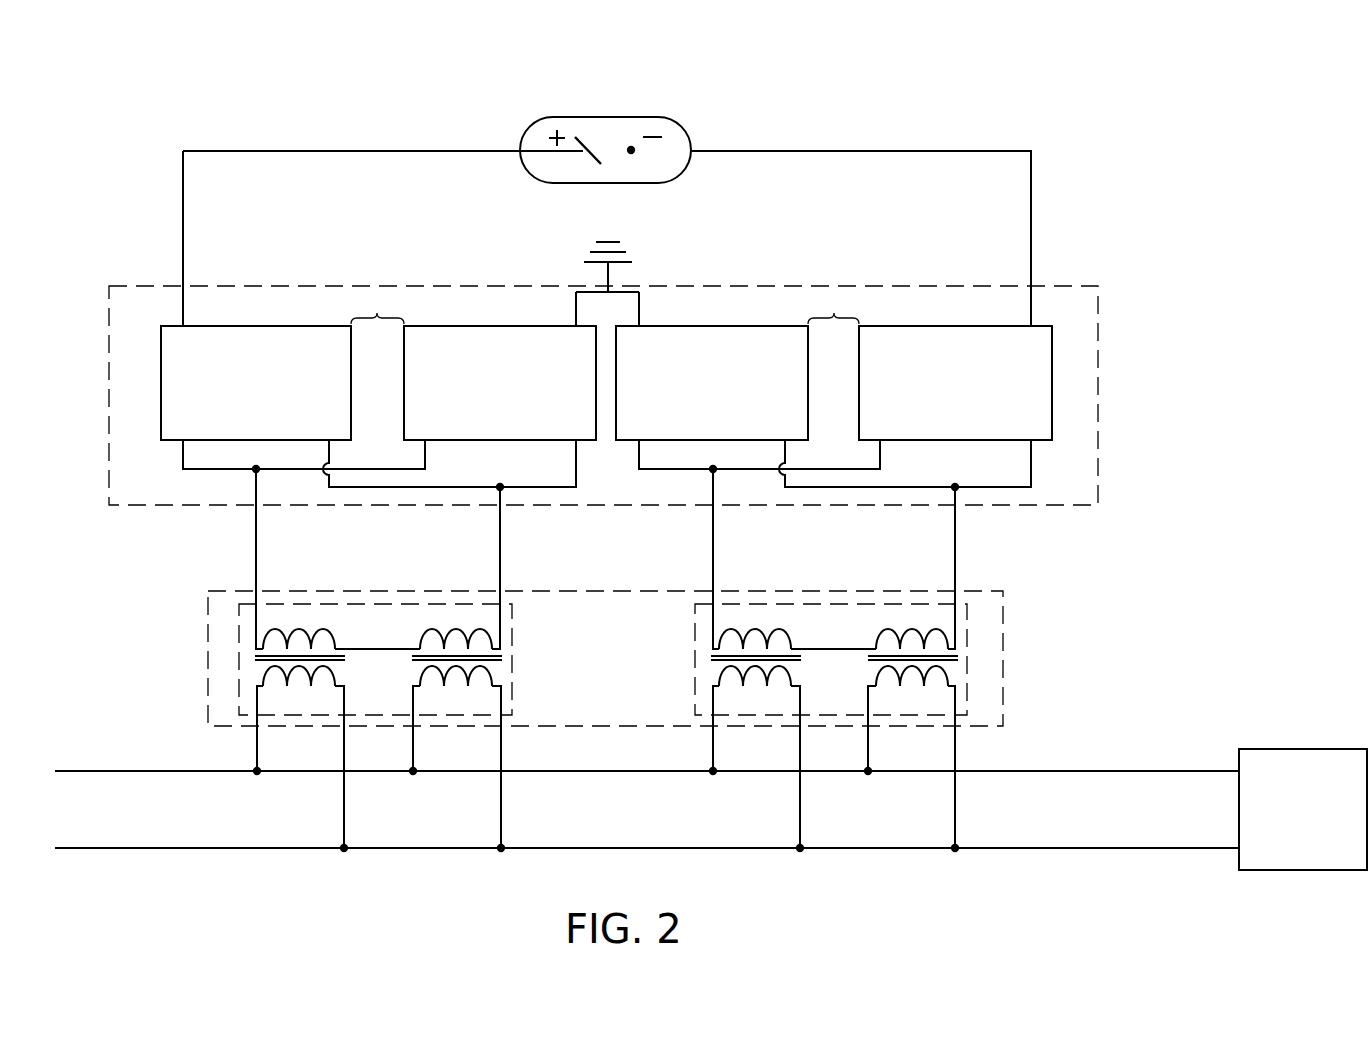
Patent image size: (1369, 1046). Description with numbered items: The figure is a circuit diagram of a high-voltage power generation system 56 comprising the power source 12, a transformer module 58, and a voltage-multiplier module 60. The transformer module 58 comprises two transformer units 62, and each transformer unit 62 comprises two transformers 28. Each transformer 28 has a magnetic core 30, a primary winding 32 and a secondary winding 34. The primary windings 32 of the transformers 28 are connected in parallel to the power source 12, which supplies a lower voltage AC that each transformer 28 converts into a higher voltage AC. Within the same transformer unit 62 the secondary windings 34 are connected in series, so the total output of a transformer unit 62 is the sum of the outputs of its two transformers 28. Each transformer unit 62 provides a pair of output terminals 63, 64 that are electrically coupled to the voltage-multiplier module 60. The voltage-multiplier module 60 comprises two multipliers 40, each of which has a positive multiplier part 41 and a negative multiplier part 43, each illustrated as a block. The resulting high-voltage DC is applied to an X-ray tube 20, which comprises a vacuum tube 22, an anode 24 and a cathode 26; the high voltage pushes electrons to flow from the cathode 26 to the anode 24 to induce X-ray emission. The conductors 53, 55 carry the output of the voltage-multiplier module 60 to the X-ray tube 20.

The power source 12 is at (1308, 749).
The X-ray tube 20 is at (605, 117).
The vacuum tube 22 is at (553, 117).
The anode 24 is at (588, 157).
The cathode 26 is at (632, 154).
The transformer 28 is at (324, 638).
The magnetic core 30 is at (262, 662).
The primary winding 32 is at (320, 678).
The secondary winding 34 is at (322, 641).
The multiplier 40 is at (605, 304).
The positive multiplier part 41 is at (161, 347).
The negative multiplier part 43 is at (472, 325).
The positive DC conductor 53 is at (183, 212).
The negative DC conductor 55 is at (1031, 212).
The high-voltage power generation system 56 is at (1203, 93).
The transformer module 58 is at (208, 619).
The voltage-multiplier module 60 is at (109, 425).
The transformer unit 62 is at (239, 662).
The output terminal 63 is at (256, 556).
The output terminal 64 is at (500, 558).